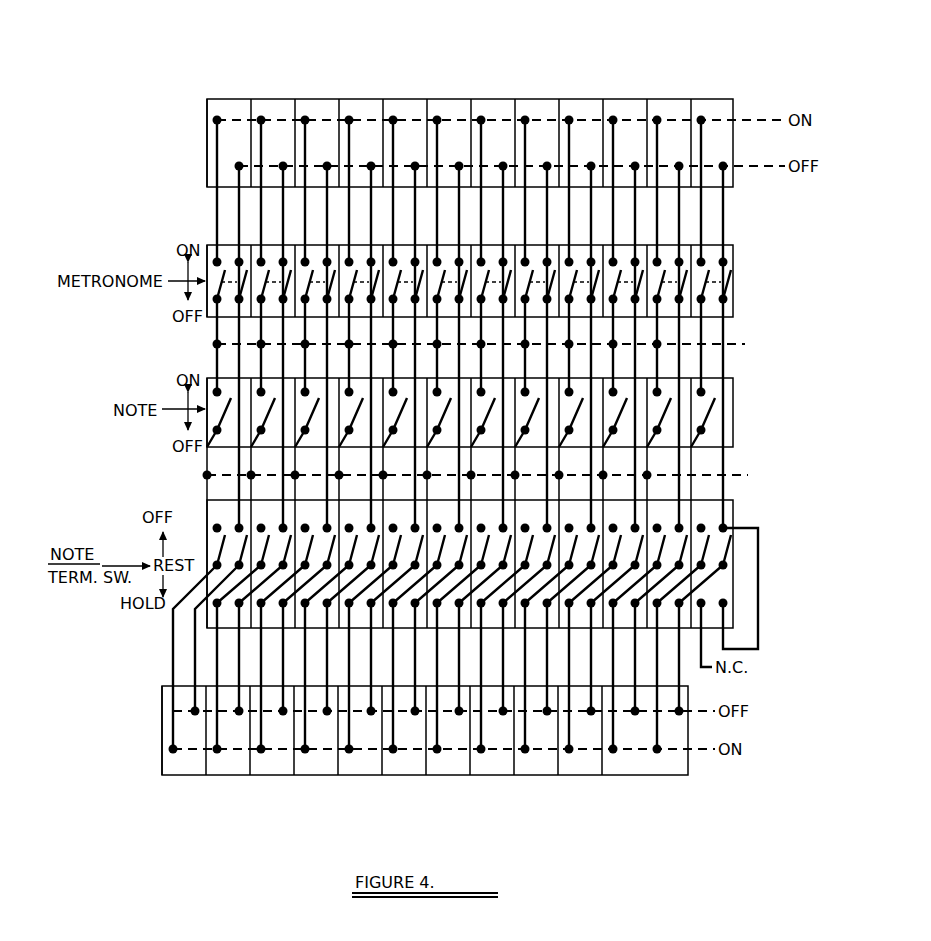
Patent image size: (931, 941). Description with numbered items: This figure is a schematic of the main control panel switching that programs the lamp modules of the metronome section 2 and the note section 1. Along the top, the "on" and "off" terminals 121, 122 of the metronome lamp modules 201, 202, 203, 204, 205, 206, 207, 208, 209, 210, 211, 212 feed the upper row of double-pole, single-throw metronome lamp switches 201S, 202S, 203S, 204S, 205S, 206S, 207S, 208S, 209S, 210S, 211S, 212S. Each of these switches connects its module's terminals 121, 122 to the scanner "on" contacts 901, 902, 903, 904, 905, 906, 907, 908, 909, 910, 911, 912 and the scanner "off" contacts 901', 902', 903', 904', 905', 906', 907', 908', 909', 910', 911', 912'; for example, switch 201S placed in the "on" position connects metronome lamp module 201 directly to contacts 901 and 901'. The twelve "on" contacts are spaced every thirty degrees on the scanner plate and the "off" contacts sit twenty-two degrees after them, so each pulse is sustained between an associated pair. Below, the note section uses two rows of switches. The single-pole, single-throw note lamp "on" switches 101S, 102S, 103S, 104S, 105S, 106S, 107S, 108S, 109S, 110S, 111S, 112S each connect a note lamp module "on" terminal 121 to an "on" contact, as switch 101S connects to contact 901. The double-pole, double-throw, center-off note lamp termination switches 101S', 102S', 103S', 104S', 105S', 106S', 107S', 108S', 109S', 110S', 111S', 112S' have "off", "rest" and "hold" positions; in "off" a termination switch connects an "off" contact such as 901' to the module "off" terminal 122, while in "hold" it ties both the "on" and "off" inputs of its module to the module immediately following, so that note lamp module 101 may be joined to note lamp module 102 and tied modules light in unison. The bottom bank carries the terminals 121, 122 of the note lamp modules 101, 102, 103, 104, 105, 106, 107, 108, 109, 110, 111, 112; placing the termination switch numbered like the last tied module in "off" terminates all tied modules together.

The note section 1 is at (160, 719).
The metronome section 2 is at (205, 157).
The lamp module on terminal 121 is at (723, 162).
The lamp module off terminal 122 is at (701, 116).
The note lamp module 101 is at (191, 777).
The note lamp module 102 is at (235, 777).
The note lamp module 103 is at (279, 777).
The note lamp module 104 is at (323, 777).
The note lamp module 105 is at (367, 777).
The note lamp module 106 is at (411, 777).
The note lamp module 107 is at (455, 777).
The note lamp module 108 is at (499, 777).
The note lamp module 109 is at (543, 777).
The note lamp module 110 is at (587, 777).
The note lamp module 111 is at (631, 777).
The note lamp module 112 is at (675, 777).
The metronome lamp module 201 is at (235, 112).
The metronome lamp module 202 is at (279, 112).
The metronome lamp module 203 is at (323, 112).
The metronome lamp module 204 is at (367, 112).
The metronome lamp module 205 is at (411, 112).
The metronome lamp module 206 is at (455, 112).
The metronome lamp module 207 is at (499, 112).
The metronome lamp module 208 is at (543, 112).
The metronome lamp module 209 is at (587, 112).
The metronome lamp module 210 is at (631, 112).
The metronome lamp module 211 is at (675, 112).
The metronome lamp module 212 is at (722, 114).
The metronome lamp switch 201S is at (225, 262).
The metronome lamp switch 202S is at (269, 262).
The metronome lamp switch 203S is at (313, 262).
The metronome lamp switch 204S is at (357, 262).
The metronome lamp switch 205S is at (401, 262).
The metronome lamp switch 206S is at (445, 262).
The metronome lamp switch 207S is at (489, 262).
The metronome lamp switch 208S is at (533, 262).
The metronome lamp switch 209S is at (577, 262).
The metronome lamp switch 210S is at (621, 262).
The metronome lamp switch 211S is at (665, 262).
The metronome lamp switch 212S is at (709, 262).
The note lamp on switch 101S is at (237, 489).
The note lamp on switch 102S is at (281, 489).
The note lamp on switch 103S is at (325, 489).
The note lamp on switch 104S is at (369, 489).
The note lamp on switch 105S is at (413, 489).
The note lamp on switch 106S is at (457, 489).
The note lamp on switch 107S is at (501, 489).
The note lamp on switch 108S is at (545, 489).
The note lamp on switch 109S is at (589, 489).
The note lamp on switch 110S is at (633, 489).
The note lamp on switch 111S is at (677, 489).
The note lamp on switch 112S is at (721, 489).
The note lamp termination switch 101S' is at (223, 593).
The note lamp termination switch 102S' is at (254, 601).
The note lamp termination switch 103S' is at (298, 593).
The note lamp termination switch 104S' is at (342, 601).
The note lamp termination switch 105S' is at (386, 593).
The note lamp termination switch 106S' is at (430, 601).
The note lamp termination switch 107S' is at (474, 593).
The note lamp termination switch 108S' is at (518, 601).
The note lamp termination switch 109S' is at (562, 593).
The note lamp termination switch 110S' is at (606, 601).
The note lamp termination switch 111S' is at (650, 593).
The note lamp termination switch 112S' is at (734, 587).
The scanner on contact 901 is at (458, 340).
The scanner on contact 902 is at (277, 335).
The scanner on contact 903 is at (321, 335).
The scanner on contact 904 is at (365, 335).
The scanner on contact 905 is at (409, 335).
The scanner on contact 906 is at (453, 335).
The scanner on contact 907 is at (497, 335).
The scanner on contact 908 is at (541, 335).
The scanner on contact 909 is at (585, 335).
The scanner on contact 910 is at (629, 335).
The scanner on contact 911 is at (673, 335).
The scanner on contact 912 is at (732, 334).
The scanner off contact 901' is at (453, 469).
The scanner off contact 902' is at (262, 466).
The scanner off contact 903' is at (306, 466).
The scanner off contact 904' is at (350, 466).
The scanner off contact 905' is at (394, 466).
The scanner off contact 906' is at (438, 466).
The scanner off contact 907' is at (482, 466).
The scanner off contact 908' is at (526, 466).
The scanner off contact 909' is at (570, 466).
The scanner off contact 910' is at (614, 466).
The scanner off contact 911' is at (658, 466).
The scanner off contact 912' is at (729, 465).